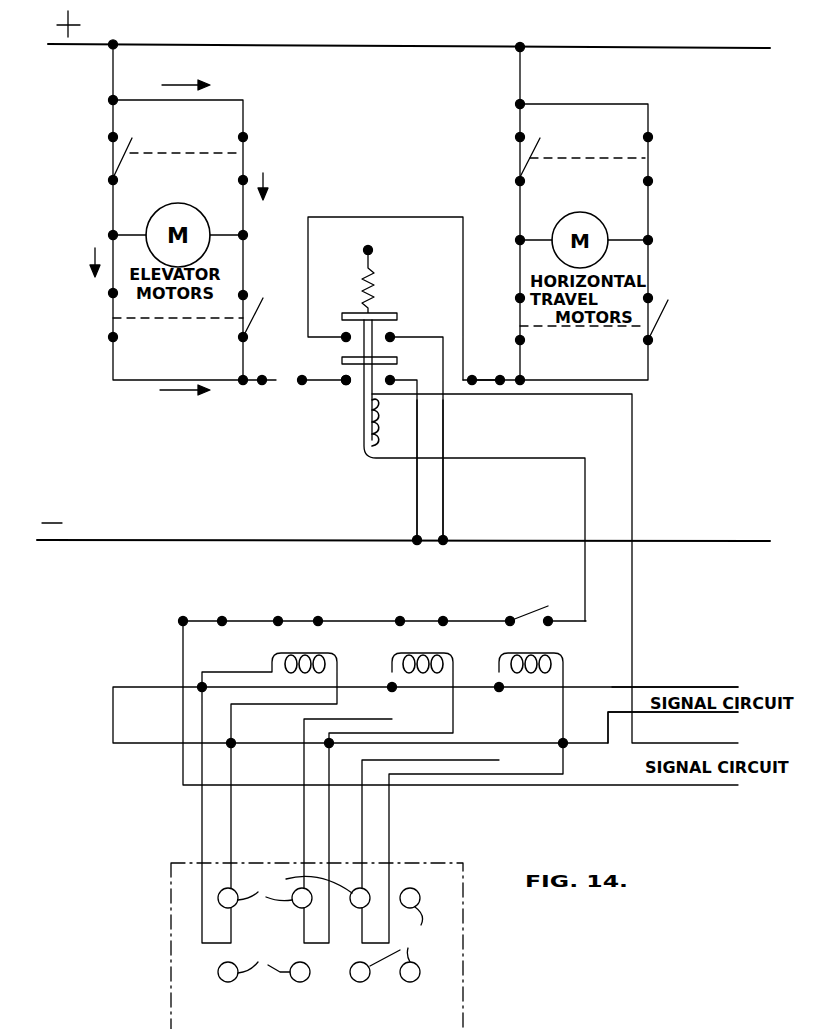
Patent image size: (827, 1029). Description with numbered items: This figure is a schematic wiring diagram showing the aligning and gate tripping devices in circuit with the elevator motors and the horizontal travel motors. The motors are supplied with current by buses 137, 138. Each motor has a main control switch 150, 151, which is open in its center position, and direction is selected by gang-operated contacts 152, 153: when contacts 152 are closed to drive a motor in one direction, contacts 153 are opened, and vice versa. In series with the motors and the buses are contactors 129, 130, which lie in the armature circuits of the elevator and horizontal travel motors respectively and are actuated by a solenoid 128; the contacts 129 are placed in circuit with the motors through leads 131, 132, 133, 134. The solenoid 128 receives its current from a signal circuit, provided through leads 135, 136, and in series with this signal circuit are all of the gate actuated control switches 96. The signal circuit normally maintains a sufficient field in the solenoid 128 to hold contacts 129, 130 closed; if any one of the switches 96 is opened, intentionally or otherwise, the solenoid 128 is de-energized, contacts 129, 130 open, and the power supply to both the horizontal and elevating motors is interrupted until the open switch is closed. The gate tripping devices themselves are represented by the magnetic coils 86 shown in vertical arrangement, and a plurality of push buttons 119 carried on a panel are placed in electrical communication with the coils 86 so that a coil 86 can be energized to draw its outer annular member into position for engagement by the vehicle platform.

The bus 138 is at (386, 45).
The bus 137 is at (242, 540).
The lead 131 is at (113, 80).
The lead 133 is at (520, 80).
The contacts 153 is at (122, 152).
The contacts 152 is at (243, 160).
The main control switch 150 is at (306, 356).
The main control switch 151 is at (494, 380).
The contacts 129 is at (378, 313).
The contacts 130 is at (388, 360).
The solenoid 128 is at (358, 430).
The lead 132 is at (415, 515).
The lead 134 is at (445, 500).
The lead 135 is at (614, 657).
The lead 136 is at (590, 743).
The gate actuated control switches 96 is at (218, 618).
The magnetic coil 86 is at (316, 660).
The push buttons 119 is at (290, 884).